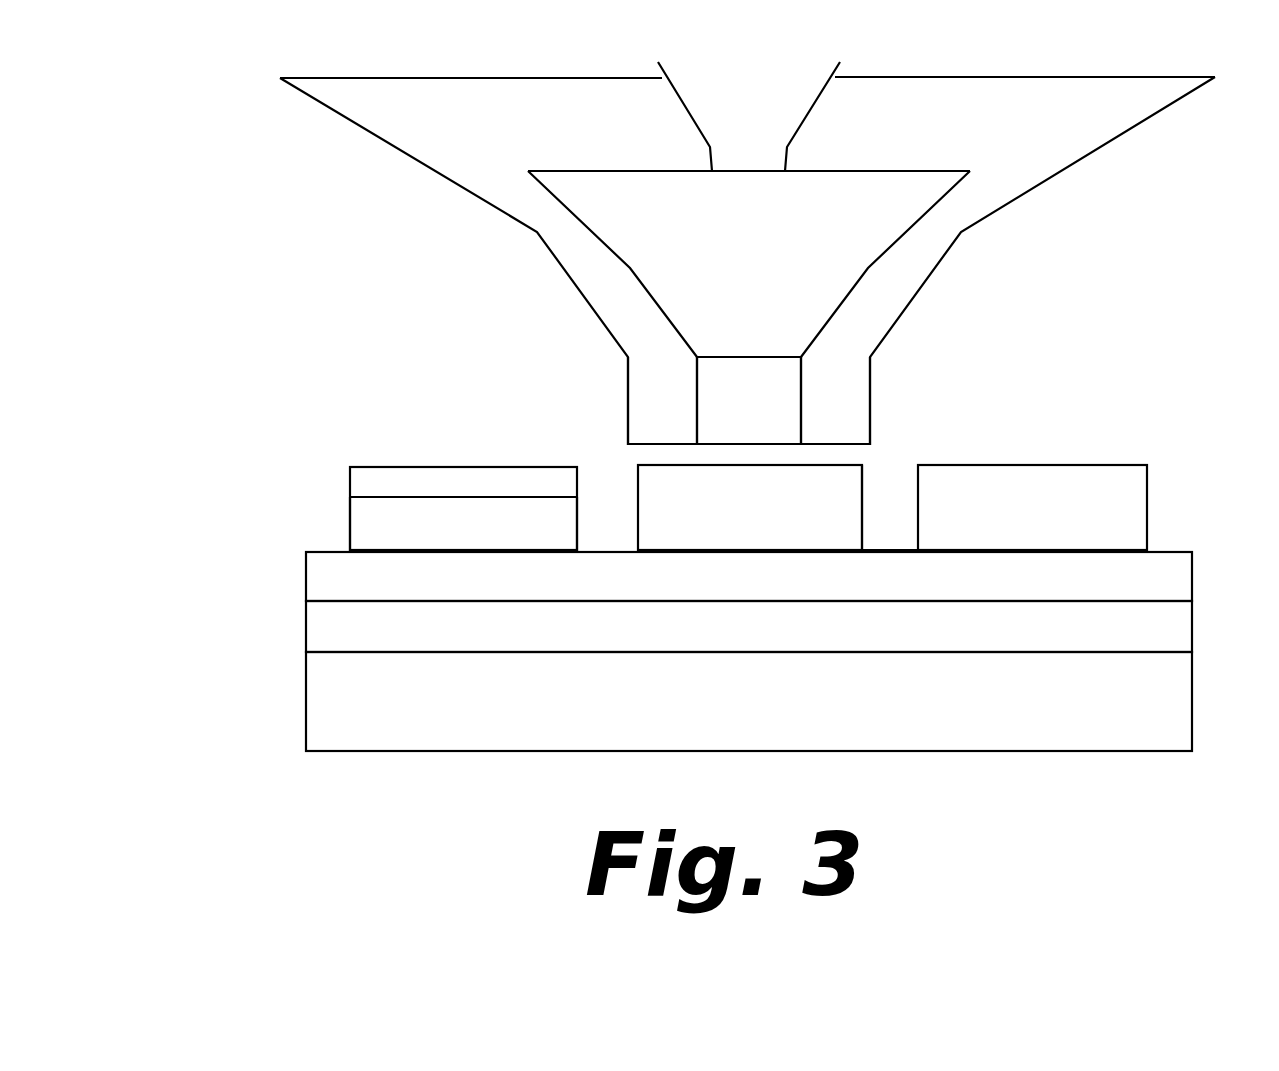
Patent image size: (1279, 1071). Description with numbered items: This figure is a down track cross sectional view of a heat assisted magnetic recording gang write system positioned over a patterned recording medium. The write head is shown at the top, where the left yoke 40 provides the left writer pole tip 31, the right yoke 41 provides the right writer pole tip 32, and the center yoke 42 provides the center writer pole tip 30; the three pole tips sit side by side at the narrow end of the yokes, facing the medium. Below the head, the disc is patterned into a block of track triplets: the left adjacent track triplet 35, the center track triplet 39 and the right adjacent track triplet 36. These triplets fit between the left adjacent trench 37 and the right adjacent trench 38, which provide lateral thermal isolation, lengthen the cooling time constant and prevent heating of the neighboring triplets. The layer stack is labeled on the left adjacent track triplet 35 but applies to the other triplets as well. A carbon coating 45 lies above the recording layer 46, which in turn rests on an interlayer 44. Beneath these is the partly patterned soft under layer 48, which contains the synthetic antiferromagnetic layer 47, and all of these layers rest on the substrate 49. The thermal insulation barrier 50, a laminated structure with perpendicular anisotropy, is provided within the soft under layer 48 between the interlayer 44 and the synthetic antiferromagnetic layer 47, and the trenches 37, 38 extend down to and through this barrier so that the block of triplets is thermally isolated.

The central writer pole tip 30 is at (790, 402).
The right outer writer pole tip 31 is at (660, 412).
The left outer writer pole tip 32 is at (843, 400).
The left adjacent track triplet 35 is at (380, 465).
The right adjacent track triplet 36 is at (1083, 490).
The left trench 37 is at (623, 532).
The right trench 38 is at (895, 543).
The center track triplet 39 is at (840, 495).
The left yoke 40 is at (540, 100).
The right yoke 41 is at (937, 98).
The center yoke 42 is at (860, 237).
The interlayer 44 is at (345, 518).
The carbon coating 45 is at (443, 462).
The recording layer 46 is at (348, 480).
The synthetic antiferromagnetic layer 47 is at (300, 573).
The soft under layer 48 is at (300, 627).
The substrate 49 is at (300, 685).
The thermal insulation barrier 50 is at (618, 563).